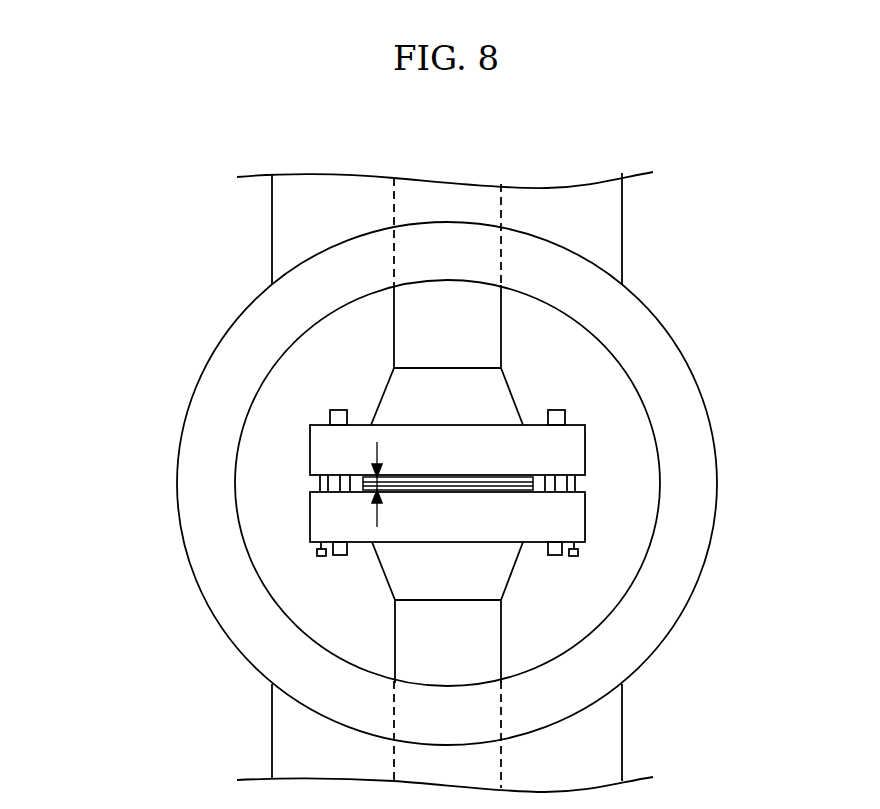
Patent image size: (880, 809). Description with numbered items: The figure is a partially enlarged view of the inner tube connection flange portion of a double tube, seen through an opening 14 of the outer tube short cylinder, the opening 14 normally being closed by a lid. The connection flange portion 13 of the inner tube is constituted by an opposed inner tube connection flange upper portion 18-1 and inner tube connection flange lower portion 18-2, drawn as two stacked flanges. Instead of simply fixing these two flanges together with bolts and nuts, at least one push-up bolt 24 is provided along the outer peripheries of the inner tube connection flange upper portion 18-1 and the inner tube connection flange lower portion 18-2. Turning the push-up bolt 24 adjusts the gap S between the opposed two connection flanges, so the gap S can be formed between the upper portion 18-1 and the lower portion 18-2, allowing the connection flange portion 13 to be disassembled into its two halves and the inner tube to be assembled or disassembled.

The connection flange portion 13 is at (322, 483).
The inner tube connection flange upper portion 18-1 is at (310, 462).
The inner tube connection flange lower portion 18-2 is at (310, 500).
The opening 14 is at (718, 477).
The push-up bolt 24 is at (579, 550).
The gap S is at (366, 483).